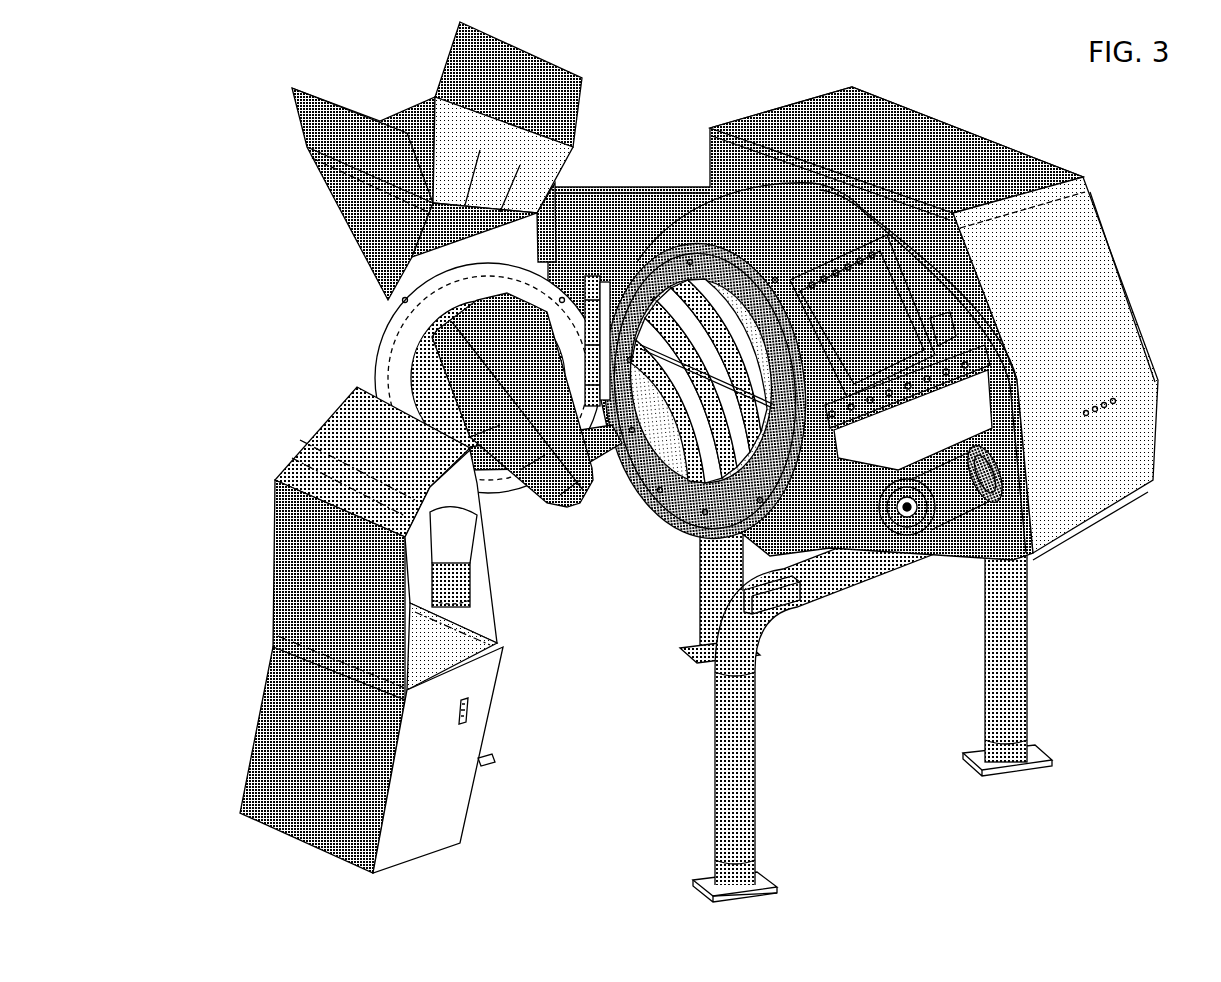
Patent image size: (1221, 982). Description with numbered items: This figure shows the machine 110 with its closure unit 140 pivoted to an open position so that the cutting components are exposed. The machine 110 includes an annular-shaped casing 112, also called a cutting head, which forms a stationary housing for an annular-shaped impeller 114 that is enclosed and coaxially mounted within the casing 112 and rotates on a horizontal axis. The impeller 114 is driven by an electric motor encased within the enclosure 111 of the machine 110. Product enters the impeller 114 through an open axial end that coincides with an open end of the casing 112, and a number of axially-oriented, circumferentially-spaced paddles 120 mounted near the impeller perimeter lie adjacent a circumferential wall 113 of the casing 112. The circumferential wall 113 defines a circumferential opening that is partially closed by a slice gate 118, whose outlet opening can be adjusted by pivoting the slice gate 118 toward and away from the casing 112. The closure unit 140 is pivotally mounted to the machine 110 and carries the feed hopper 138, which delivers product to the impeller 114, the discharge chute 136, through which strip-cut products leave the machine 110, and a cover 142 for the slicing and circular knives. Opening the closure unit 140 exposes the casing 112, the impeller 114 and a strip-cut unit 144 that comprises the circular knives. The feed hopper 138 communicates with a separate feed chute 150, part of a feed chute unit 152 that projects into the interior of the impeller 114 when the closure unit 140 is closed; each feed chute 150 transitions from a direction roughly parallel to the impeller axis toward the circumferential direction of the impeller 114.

The machine 110 is at (660, 462).
The enclosure 111 is at (963, 140).
The casing 112 is at (853, 332).
The circumferential wall 113 is at (690, 530).
The impeller 114 is at (708, 488).
The slice gate 118 is at (893, 313).
The paddles 120 is at (757, 330).
The discharge chute 136 is at (458, 812).
The feed hopper 138 is at (352, 206).
The closure unit 140 is at (356, 622).
The cover 142 is at (333, 423).
The strip-cut unit 144 is at (968, 409).
The feed chute 150 is at (585, 500).
The feed chute unit 152 is at (538, 512).